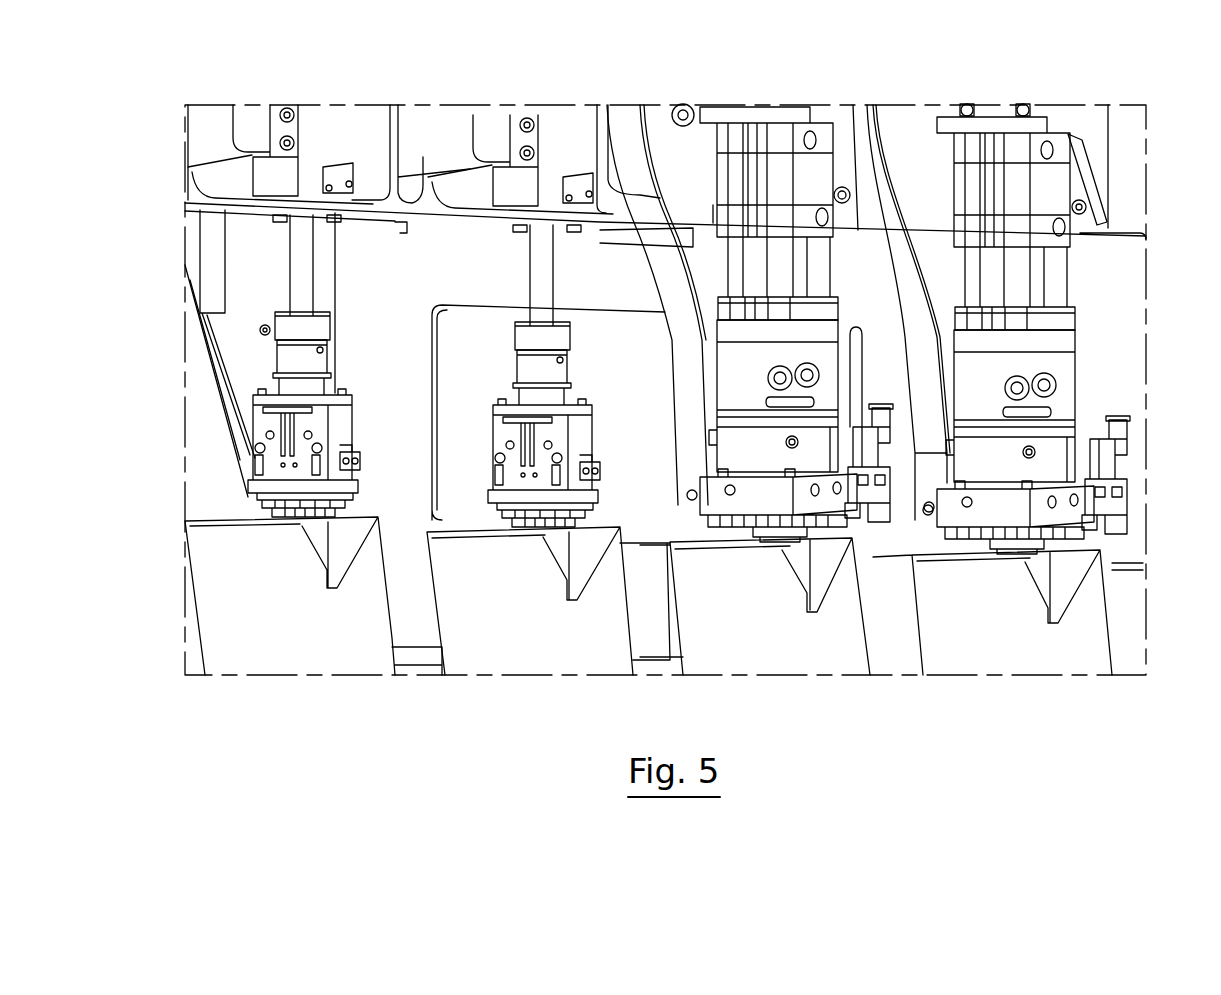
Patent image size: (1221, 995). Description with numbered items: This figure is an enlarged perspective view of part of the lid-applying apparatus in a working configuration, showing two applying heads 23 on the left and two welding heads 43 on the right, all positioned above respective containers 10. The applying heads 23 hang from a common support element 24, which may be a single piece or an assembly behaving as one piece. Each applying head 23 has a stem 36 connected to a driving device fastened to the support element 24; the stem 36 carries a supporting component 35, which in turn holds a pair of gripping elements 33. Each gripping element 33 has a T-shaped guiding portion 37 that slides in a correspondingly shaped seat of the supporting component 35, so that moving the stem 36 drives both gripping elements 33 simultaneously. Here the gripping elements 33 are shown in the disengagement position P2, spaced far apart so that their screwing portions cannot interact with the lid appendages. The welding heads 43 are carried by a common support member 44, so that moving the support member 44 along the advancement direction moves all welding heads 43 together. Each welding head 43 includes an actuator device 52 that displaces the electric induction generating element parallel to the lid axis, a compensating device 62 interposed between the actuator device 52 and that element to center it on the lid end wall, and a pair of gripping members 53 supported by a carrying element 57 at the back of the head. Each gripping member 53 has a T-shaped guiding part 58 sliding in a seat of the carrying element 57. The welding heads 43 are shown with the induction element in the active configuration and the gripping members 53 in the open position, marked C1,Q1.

The container 10 is at (822, 636).
The applying head 23 is at (218, 394).
The support element 24 is at (423, 157).
The gripping element 33 is at (372, 513).
The supporting component 35 is at (337, 418).
The stem 36 is at (300, 250).
The guiding portion 37 is at (343, 450).
The welding head 43 is at (775, 95).
The support member 44 is at (916, 163).
The actuator device 52 is at (1050, 193).
The gripping member 53 is at (1067, 545).
The carrying element 57 is at (1100, 458).
The guiding part 58 is at (855, 505).
The compensating device 62 is at (745, 371).
The disengagement position P2 is at (218, 477).
The active configuration and open position C1,Q1 is at (737, 575).